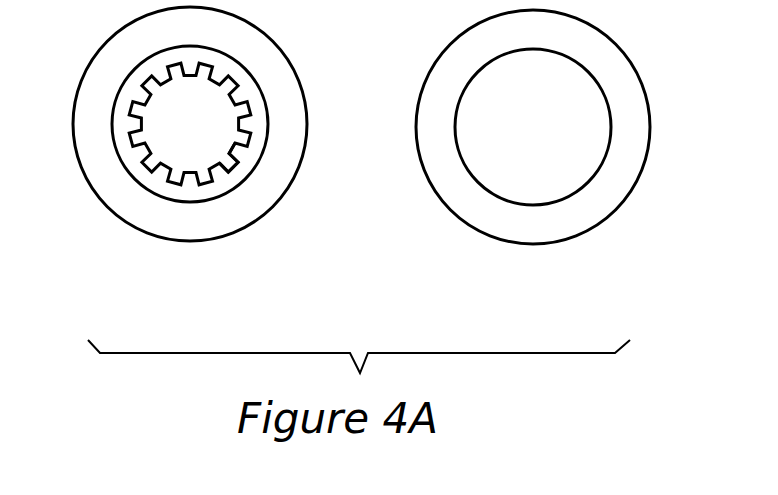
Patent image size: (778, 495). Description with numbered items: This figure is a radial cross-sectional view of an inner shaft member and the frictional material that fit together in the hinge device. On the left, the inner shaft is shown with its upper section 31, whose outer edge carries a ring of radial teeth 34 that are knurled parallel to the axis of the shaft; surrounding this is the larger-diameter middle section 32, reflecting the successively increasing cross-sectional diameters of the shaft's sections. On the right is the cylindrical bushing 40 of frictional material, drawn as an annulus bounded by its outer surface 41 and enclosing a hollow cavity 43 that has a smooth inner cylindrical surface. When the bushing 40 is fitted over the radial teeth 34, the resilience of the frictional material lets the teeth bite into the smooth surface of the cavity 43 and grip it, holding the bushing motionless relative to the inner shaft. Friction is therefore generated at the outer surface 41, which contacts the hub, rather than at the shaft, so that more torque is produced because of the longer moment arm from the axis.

The upper section 31 is at (175, 127).
The middle section 32 is at (169, 200).
The radial teeth 34 is at (238, 160).
The cylindrical bushing 40 is at (572, 140).
The outer surface 41 is at (628, 57).
The hollow cavity 43 is at (583, 165).